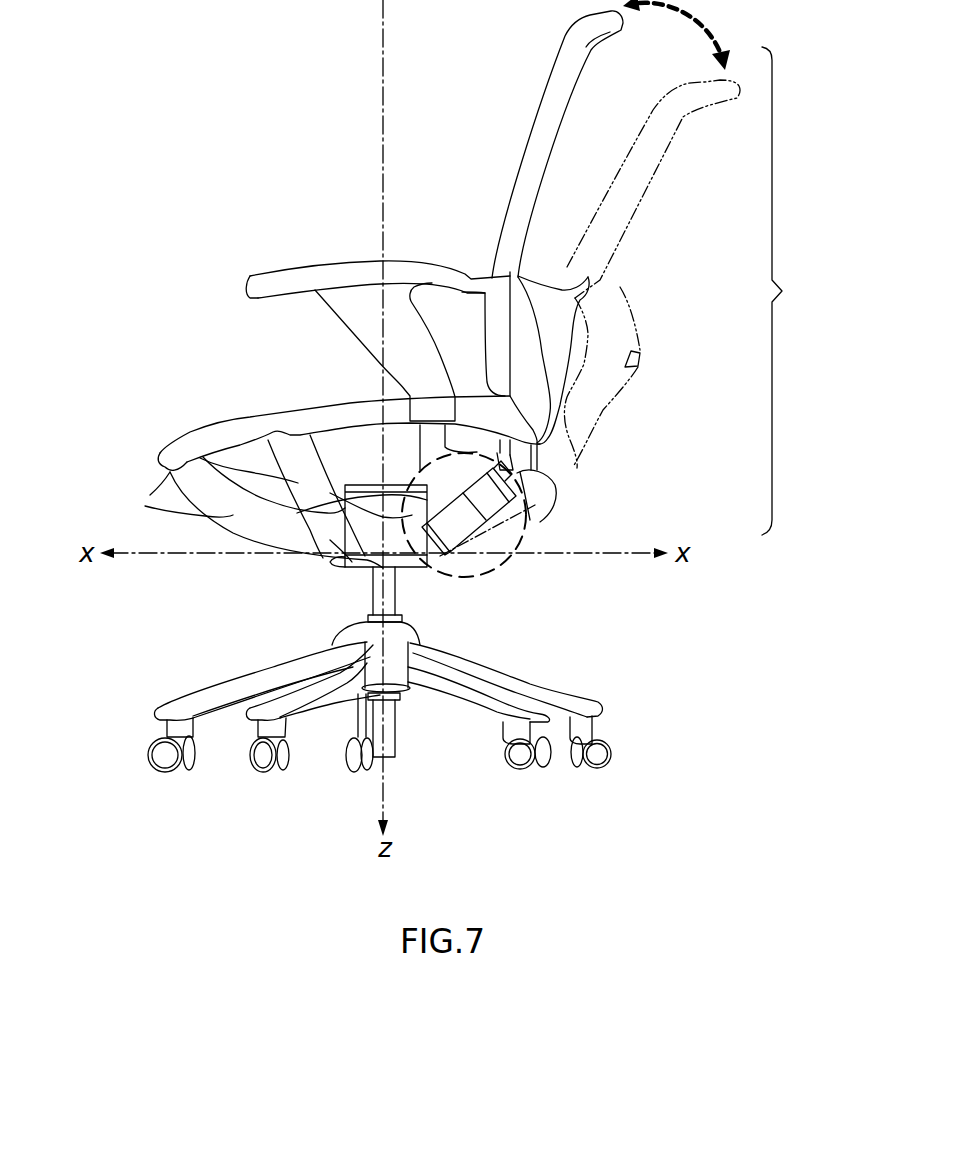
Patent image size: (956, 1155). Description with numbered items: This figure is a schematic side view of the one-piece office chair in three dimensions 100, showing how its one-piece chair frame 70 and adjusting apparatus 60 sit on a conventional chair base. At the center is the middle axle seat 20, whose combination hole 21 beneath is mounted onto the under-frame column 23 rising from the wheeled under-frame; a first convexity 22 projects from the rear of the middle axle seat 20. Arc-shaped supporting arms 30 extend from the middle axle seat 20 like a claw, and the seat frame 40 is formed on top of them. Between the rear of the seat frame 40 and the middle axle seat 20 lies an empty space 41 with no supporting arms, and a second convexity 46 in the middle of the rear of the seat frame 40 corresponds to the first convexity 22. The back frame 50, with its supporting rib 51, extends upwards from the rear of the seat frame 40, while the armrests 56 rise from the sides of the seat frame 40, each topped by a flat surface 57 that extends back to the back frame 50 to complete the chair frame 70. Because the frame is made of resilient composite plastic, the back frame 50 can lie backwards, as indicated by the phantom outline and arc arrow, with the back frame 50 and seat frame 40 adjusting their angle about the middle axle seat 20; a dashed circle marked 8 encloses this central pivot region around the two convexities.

The one-piece office chair in three dimensions 100 is at (157, 29).
The middle axle seat 20 is at (313, 507).
The combination hole 21 is at (373, 573).
The first convexity 22 is at (447, 555).
The under-frame column 23 is at (364, 627).
The supporting arms 30 is at (228, 512).
The seat frame 40 is at (216, 434).
The empty space 41 is at (368, 428).
The second convexity 46 is at (516, 472).
The back frame 50 is at (562, 63).
The supporting rib 51 is at (576, 296).
The armrests 56 is at (351, 291).
The flat surface 57 is at (437, 268).
The adjusting apparatus 60 is at (530, 555).
The one-piece chair frame 70 is at (787, 291).
The detail region of FIG. 8 is at (507, 578).